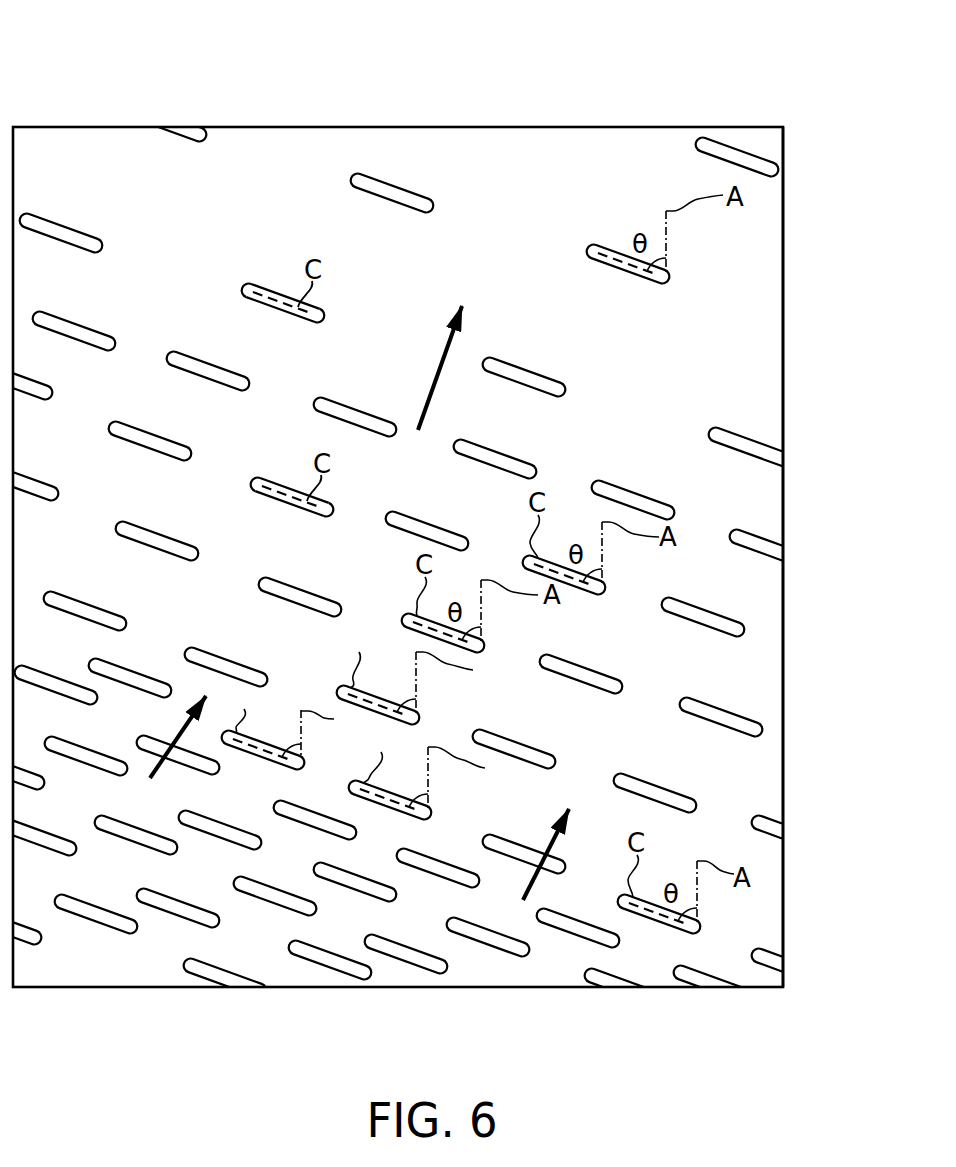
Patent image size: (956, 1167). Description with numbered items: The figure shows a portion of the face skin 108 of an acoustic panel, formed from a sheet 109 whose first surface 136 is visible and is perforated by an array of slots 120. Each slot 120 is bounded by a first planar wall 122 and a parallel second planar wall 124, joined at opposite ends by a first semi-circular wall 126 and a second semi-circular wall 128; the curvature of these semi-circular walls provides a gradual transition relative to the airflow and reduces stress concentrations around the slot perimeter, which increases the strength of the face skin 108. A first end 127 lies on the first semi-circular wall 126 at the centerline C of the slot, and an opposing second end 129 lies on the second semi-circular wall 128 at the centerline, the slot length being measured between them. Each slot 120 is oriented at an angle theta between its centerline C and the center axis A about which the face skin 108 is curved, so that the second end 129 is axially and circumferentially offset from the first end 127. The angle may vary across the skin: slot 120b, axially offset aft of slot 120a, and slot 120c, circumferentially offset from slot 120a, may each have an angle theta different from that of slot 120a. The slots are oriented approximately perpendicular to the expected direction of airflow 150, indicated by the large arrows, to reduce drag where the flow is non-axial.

The face skin 108 is at (136, 90).
The sheet 109 is at (778, 273).
The slot 120 is at (536, 368).
The slot 120a is at (434, 807).
The slot 120b is at (424, 714).
The slot 120c is at (253, 766).
The first planar wall 122 is at (276, 293).
The second planar wall 124 is at (271, 307).
The first semi-circular wall 126 is at (251, 284).
The first end 127 is at (242, 289).
The second semi-circular wall 128 is at (314, 321).
The second end 129 is at (325, 318).
The first surface 136 is at (672, 360).
The direction of airflow 150 is at (346, 616).